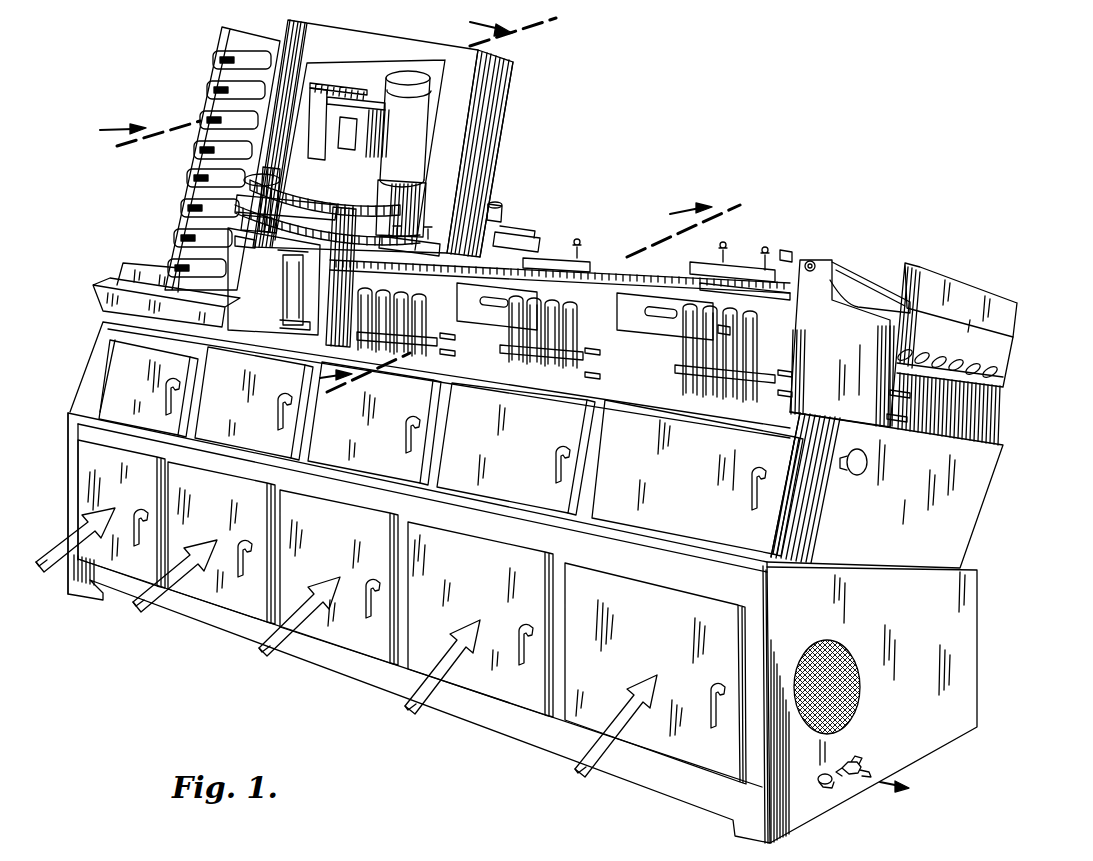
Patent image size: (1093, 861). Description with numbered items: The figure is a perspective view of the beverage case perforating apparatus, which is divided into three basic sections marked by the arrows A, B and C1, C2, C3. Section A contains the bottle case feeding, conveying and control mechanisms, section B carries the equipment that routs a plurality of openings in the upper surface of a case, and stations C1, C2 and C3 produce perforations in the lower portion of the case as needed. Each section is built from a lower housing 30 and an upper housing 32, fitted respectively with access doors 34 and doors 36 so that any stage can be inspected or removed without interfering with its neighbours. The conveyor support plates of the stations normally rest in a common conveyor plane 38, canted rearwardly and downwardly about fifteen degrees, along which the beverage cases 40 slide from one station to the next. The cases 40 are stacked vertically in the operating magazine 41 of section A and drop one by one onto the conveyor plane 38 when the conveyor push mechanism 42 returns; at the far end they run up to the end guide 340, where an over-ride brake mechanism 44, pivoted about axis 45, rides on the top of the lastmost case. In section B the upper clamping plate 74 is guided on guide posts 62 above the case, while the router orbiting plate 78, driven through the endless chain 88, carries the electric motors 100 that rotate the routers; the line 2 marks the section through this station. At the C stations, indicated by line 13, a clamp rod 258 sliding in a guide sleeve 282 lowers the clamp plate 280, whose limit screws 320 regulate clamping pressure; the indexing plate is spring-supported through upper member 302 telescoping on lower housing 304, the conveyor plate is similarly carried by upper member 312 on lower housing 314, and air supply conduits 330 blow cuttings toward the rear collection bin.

The lower housing 30 is at (975, 648).
The upper housing 32 is at (967, 519).
The access doors 34 is at (88, 468).
The doors 36 is at (233, 373).
The conveyor plane 38 is at (93, 285).
The beverage cases 40 is at (226, 88).
The operating magazine 41 is at (260, 42).
The conveyor push mechanism 42 is at (125, 267).
The over-ride brake mechanism 44 is at (970, 300).
The pivot axis 45 is at (858, 278).
The guide posts 62 is at (292, 310).
The upper clamping plate 74 is at (298, 238).
The router orbiting plate 78 is at (512, 237).
The endless chain 88 is at (500, 210).
The electric motors 100 is at (428, 140).
The clamp rod 258 is at (712, 282).
The clamp plate 280 is at (405, 240).
The guide sleeve 282 is at (720, 330).
The upper member 302 is at (513, 338).
The lower housing 304 is at (525, 357).
The upper member 312 is at (570, 314).
The lower housing 314 is at (563, 357).
The limit screws 320 is at (725, 250).
The air supply conduits 330 is at (447, 354).
The end guide 340 is at (850, 343).
The section line 2- 2 is at (328, 90).
The section line 13 is at (530, 302).
The section A is at (65, 553).
The section B is at (167, 586).
The station C1 is at (288, 628).
The station C2 is at (436, 683).
The station C3 is at (610, 742).